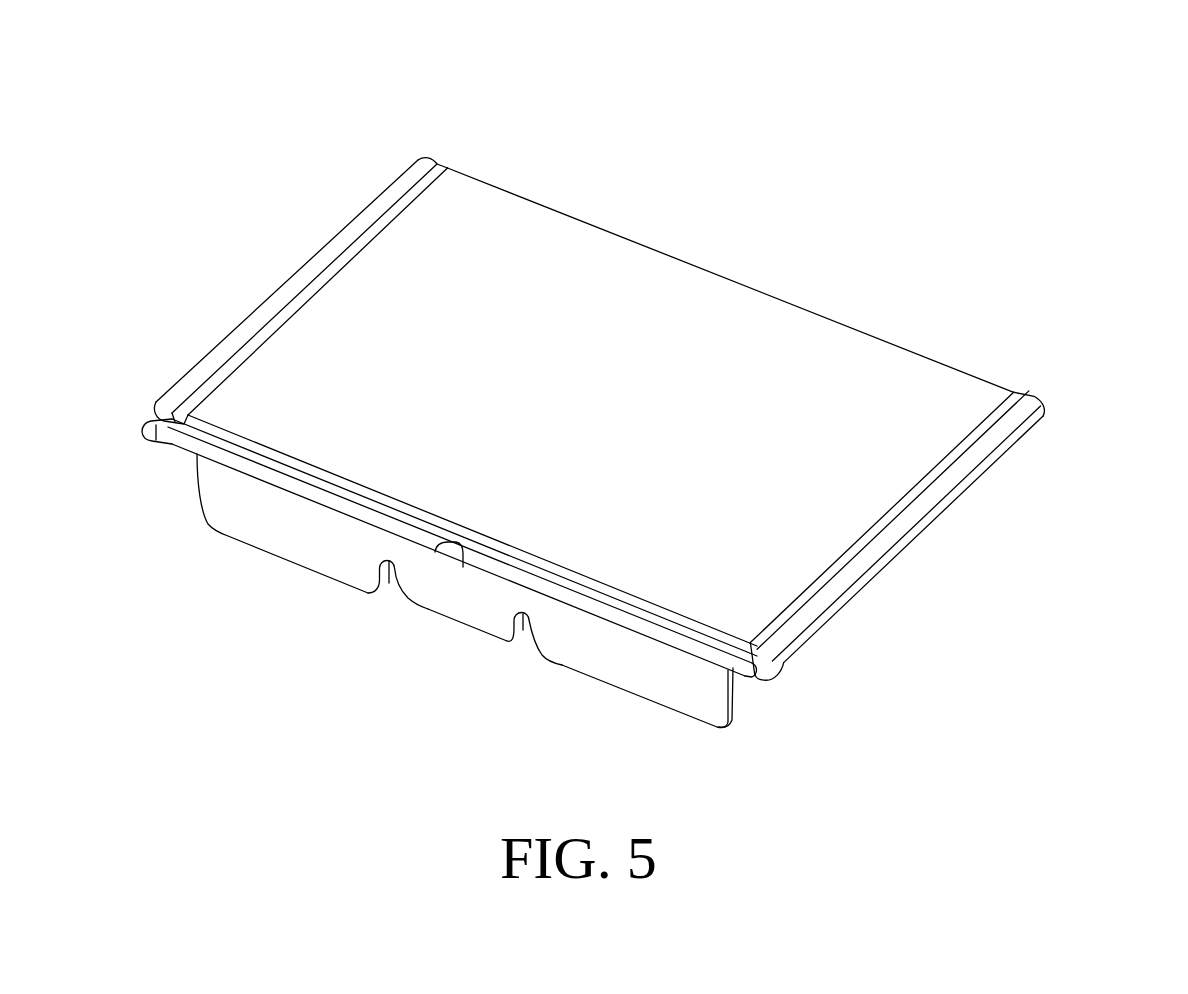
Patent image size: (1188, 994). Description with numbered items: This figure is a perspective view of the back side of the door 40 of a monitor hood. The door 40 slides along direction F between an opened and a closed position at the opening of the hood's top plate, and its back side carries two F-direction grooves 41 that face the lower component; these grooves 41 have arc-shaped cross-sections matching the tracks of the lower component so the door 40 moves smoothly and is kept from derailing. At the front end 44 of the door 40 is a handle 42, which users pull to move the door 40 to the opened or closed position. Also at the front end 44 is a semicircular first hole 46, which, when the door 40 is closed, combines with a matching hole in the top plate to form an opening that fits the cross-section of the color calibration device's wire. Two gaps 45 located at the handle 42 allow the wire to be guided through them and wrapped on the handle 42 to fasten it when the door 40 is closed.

The door 40 is at (951, 132).
The F-direction grooves 41 is at (442, 168).
The handle 42 is at (293, 532).
The front end 44 is at (683, 640).
The gaps 45 is at (394, 570).
The first hole 46 is at (461, 547).